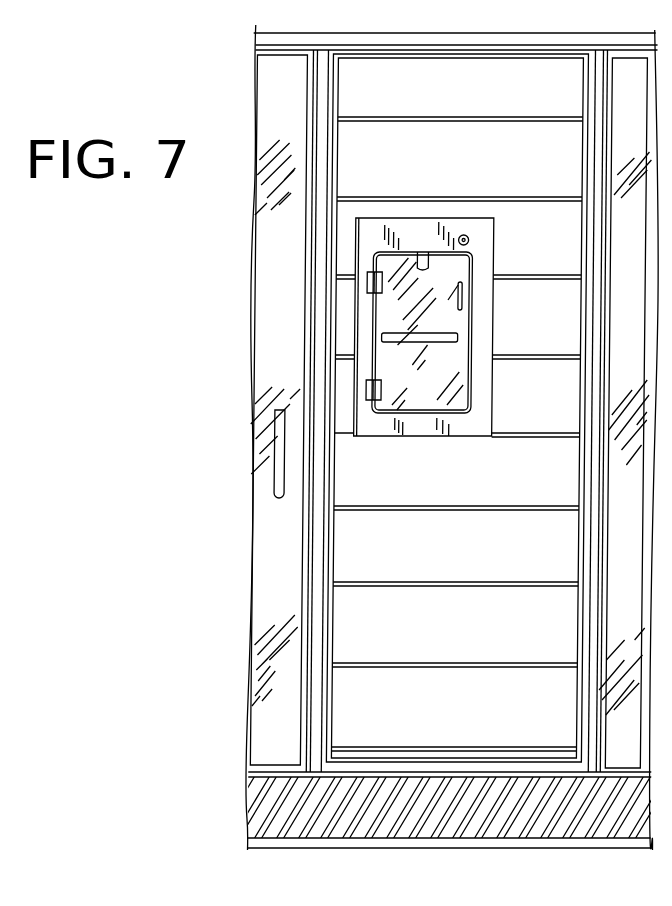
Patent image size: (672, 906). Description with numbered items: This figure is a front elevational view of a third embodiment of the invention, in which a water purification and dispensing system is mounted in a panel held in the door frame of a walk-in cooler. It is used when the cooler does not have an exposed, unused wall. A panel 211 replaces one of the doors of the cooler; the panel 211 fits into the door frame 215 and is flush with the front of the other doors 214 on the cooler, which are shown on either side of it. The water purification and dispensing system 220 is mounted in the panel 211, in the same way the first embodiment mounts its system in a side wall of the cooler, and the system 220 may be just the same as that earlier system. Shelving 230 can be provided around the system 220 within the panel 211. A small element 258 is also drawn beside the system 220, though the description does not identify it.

The doors 214 is at (272, 81).
The water purification and dispensing system 220 is at (393, 308).
The lock 258 is at (470, 240).
The panel 211 is at (350, 491).
The shelving 230 is at (363, 662).
The door frame 215 is at (315, 718).